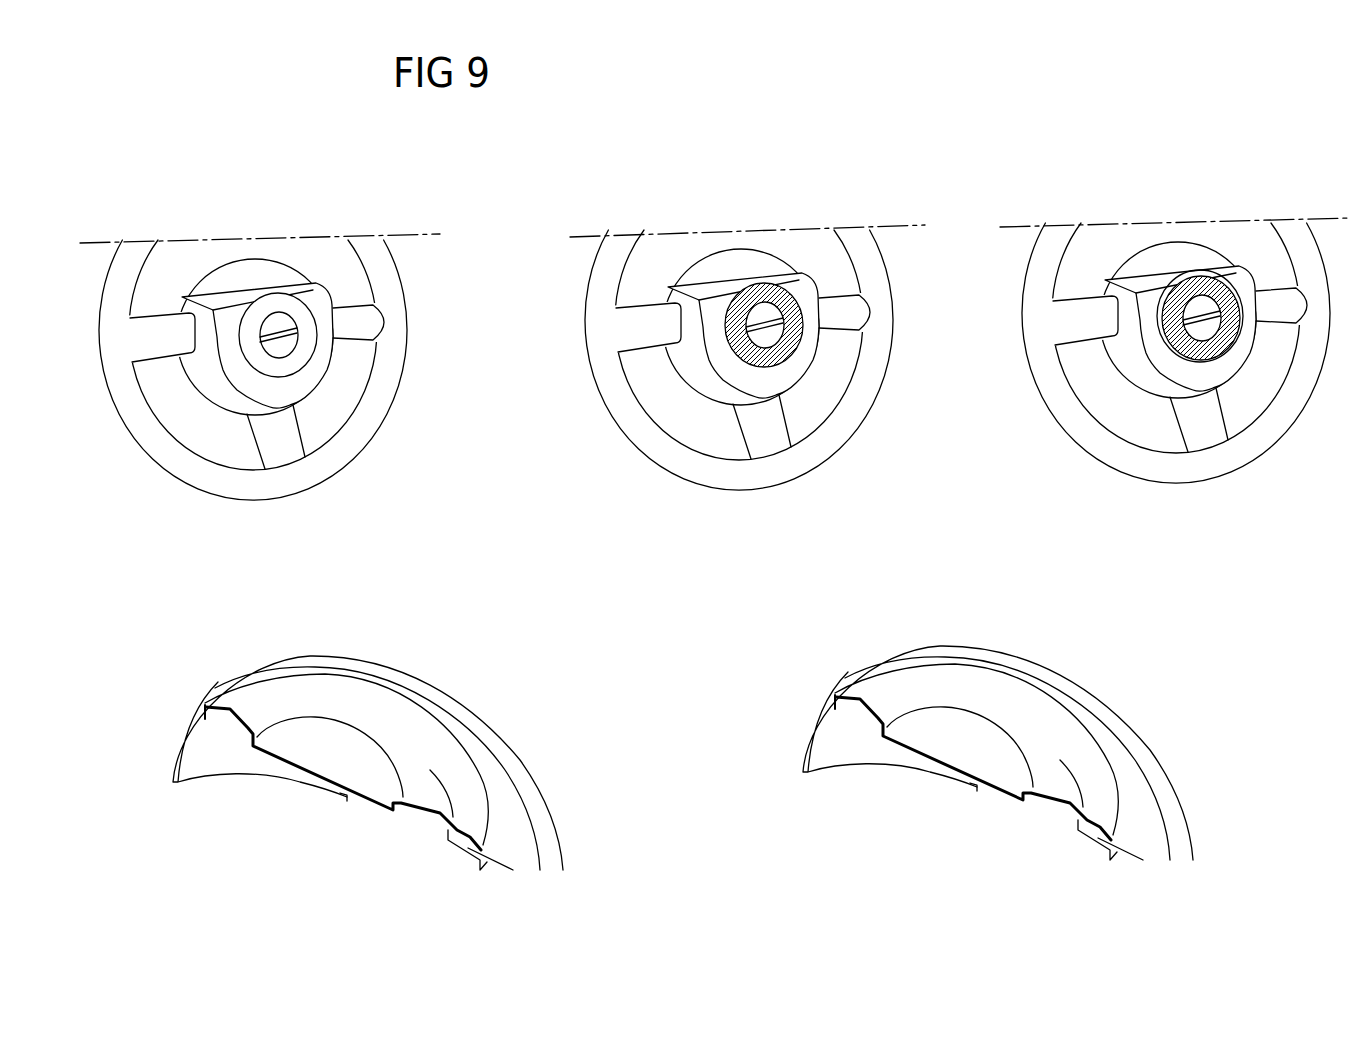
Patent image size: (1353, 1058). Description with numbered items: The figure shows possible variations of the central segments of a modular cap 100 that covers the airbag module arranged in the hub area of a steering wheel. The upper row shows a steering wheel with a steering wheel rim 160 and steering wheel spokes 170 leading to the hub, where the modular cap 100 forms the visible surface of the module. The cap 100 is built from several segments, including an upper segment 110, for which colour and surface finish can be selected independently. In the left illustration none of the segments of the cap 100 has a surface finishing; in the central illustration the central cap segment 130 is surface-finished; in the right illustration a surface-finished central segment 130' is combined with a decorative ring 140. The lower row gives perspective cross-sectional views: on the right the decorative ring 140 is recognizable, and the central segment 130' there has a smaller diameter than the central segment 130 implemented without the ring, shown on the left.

The modular cap 100 is at (1125, 258).
The upper segment 110 is at (1133, 758).
The central cap segment 130 is at (512, 521).
The central segment 130' is at (1046, 507).
The decorative ring 140 is at (1172, 283).
The steering wheel rim 160 is at (1270, 433).
The steering wheel spokes 170 is at (1192, 425).